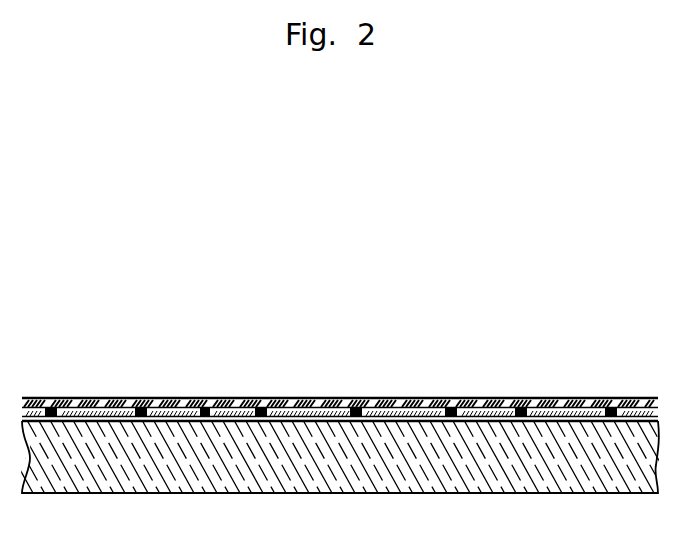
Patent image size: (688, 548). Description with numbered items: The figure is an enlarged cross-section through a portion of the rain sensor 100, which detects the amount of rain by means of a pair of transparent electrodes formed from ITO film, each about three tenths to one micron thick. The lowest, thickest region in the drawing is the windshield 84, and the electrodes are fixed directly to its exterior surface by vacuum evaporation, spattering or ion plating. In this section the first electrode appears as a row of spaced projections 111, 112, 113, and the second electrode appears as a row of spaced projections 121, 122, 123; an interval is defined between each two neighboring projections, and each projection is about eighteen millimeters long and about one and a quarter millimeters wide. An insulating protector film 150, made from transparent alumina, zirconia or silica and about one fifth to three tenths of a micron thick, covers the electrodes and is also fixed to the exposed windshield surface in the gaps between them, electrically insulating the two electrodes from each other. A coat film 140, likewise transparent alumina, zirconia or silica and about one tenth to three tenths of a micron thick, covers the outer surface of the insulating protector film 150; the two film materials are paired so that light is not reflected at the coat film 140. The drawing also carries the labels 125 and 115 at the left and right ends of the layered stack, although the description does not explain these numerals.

The sensor 100 is at (437, 360).
The protective layer 125 is at (50, 398).
The projection 111 is at (93, 398).
The projection 112 is at (303, 398).
The projection 113 is at (477, 398).
The projection 121 is at (196, 398).
The projection 122 is at (402, 398).
The projection 123 is at (557, 398).
The coat film 140 is at (348, 398).
The insulating protector film 150 is at (241, 398).
The base layer 115 is at (652, 398).
The windshield 84 is at (240, 477).